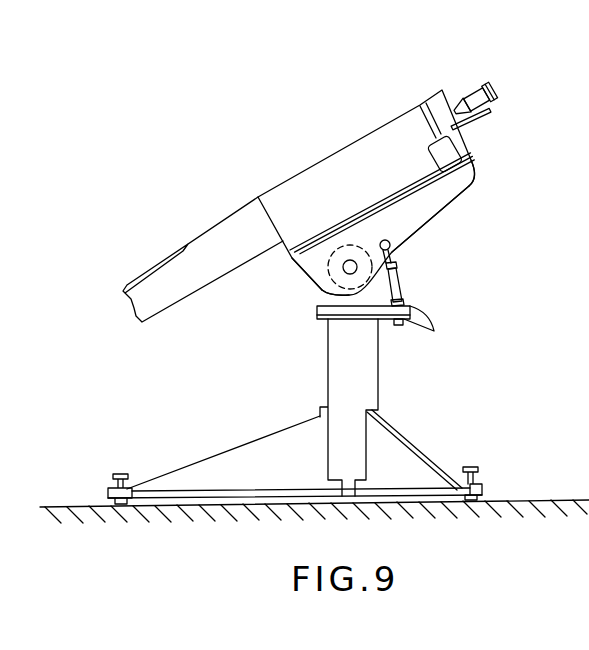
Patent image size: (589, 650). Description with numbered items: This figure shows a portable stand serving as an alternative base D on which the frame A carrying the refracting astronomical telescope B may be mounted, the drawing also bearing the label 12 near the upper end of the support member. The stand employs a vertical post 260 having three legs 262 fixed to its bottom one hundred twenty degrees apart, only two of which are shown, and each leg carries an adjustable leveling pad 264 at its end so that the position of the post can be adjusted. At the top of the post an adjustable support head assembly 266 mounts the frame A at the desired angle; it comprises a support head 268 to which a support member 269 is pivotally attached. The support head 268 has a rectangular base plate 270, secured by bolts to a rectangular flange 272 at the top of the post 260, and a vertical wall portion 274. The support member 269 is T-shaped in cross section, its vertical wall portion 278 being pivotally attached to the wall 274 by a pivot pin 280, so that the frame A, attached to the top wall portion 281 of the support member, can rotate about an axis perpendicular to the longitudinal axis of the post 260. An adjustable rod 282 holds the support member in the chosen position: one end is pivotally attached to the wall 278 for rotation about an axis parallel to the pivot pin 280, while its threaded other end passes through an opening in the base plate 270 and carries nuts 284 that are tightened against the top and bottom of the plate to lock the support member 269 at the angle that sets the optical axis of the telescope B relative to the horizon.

The frame A is at (315, 293).
The refracting astronomical telescope B is at (232, 212).
The base D is at (441, 313).
The sight mounting block 12 is at (470, 155).
The vertical post 260 is at (370, 370).
The legs 262 is at (268, 443).
The adjustable leveling pad 264 is at (115, 472).
The adjustable support head assembly 266 is at (420, 250).
The support head 268 is at (319, 294).
The support member 269 is at (489, 186).
The rectangular base plate 270 is at (317, 312).
The rectangular flange 272 is at (318, 317).
The vertical wall portion 274 is at (328, 292).
The vertical wall portion 278 is at (433, 205).
The pivot pin 280 is at (347, 261).
The top wall portion 281 is at (472, 162).
The adjustable rod 282 is at (398, 283).
The nuts 284 is at (404, 323).